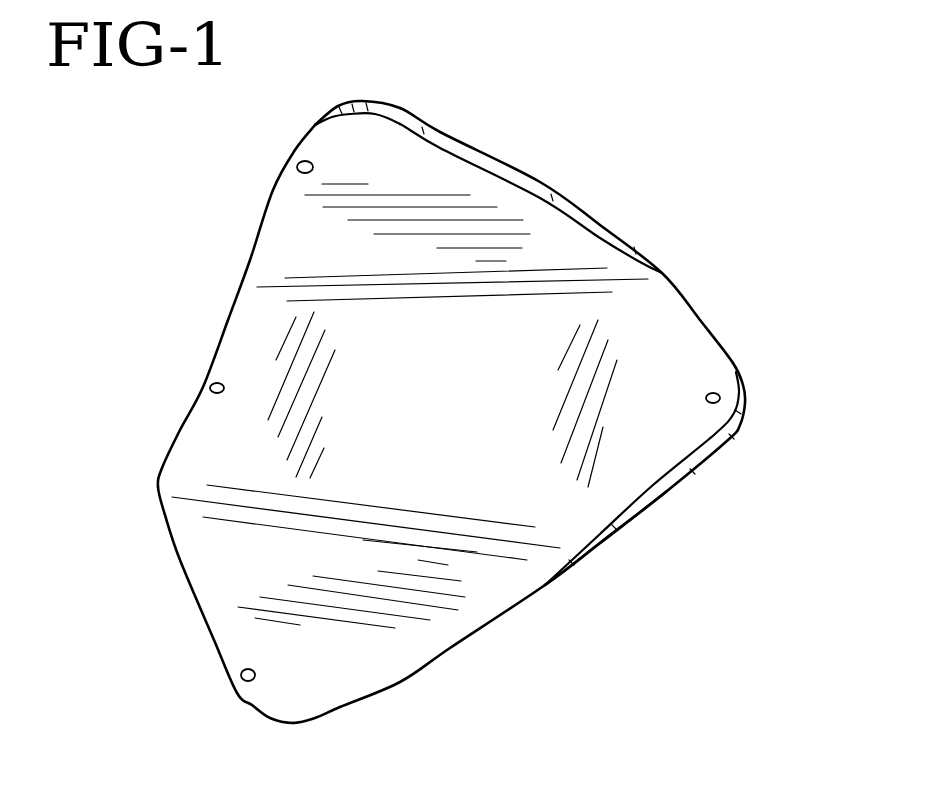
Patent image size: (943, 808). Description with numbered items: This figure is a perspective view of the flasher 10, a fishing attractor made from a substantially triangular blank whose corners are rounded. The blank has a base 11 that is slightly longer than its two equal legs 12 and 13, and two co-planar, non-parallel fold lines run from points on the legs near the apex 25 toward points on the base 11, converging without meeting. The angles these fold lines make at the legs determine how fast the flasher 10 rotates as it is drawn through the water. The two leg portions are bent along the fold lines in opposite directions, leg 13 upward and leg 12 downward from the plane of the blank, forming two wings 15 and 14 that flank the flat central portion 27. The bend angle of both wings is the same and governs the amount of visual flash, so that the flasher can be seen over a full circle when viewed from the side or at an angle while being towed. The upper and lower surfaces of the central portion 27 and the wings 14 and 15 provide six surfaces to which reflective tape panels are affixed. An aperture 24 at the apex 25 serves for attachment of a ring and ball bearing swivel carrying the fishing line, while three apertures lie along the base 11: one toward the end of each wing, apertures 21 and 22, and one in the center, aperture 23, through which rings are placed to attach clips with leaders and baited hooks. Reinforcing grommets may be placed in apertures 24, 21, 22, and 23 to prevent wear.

The flasher 10 is at (722, 111).
The base 11 is at (218, 338).
The leg 12 is at (450, 653).
The leg 13 is at (525, 187).
The wing 14 is at (229, 593).
The wing 15 is at (427, 177).
The aperture 21 is at (298, 175).
The aperture 22 is at (245, 681).
The aperture 23 is at (211, 390).
The aperture 24 is at (714, 392).
The apex 25 is at (727, 447).
The central portion 27 is at (558, 493).